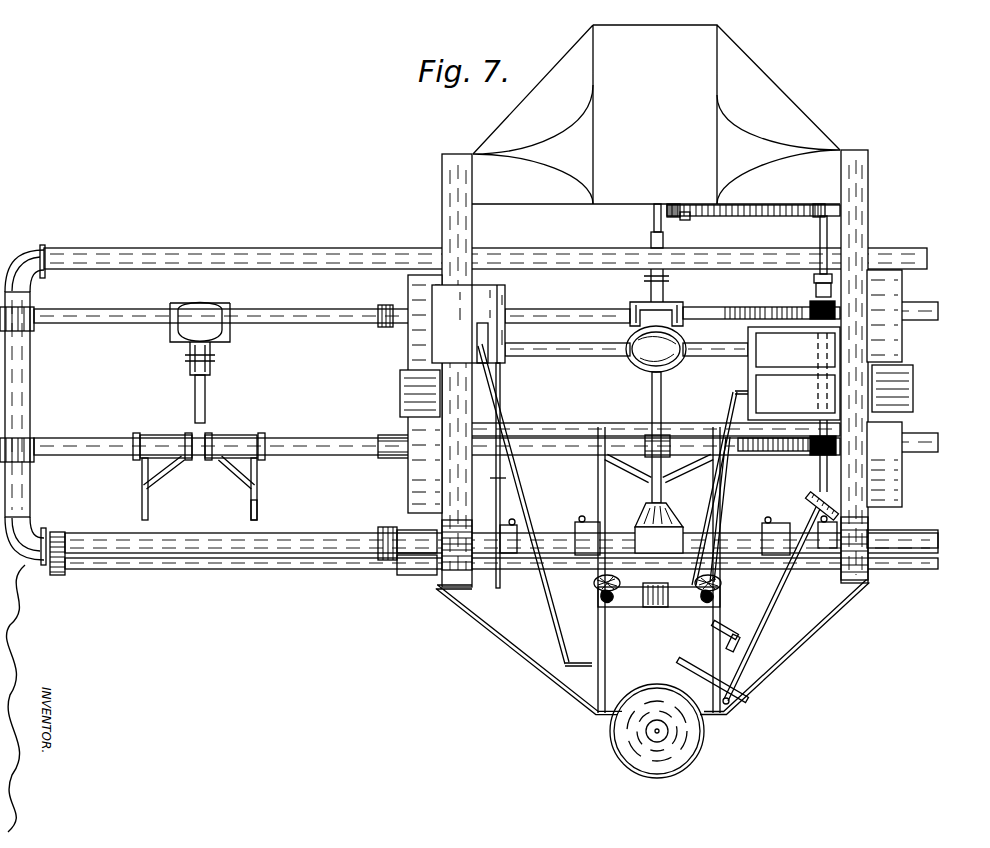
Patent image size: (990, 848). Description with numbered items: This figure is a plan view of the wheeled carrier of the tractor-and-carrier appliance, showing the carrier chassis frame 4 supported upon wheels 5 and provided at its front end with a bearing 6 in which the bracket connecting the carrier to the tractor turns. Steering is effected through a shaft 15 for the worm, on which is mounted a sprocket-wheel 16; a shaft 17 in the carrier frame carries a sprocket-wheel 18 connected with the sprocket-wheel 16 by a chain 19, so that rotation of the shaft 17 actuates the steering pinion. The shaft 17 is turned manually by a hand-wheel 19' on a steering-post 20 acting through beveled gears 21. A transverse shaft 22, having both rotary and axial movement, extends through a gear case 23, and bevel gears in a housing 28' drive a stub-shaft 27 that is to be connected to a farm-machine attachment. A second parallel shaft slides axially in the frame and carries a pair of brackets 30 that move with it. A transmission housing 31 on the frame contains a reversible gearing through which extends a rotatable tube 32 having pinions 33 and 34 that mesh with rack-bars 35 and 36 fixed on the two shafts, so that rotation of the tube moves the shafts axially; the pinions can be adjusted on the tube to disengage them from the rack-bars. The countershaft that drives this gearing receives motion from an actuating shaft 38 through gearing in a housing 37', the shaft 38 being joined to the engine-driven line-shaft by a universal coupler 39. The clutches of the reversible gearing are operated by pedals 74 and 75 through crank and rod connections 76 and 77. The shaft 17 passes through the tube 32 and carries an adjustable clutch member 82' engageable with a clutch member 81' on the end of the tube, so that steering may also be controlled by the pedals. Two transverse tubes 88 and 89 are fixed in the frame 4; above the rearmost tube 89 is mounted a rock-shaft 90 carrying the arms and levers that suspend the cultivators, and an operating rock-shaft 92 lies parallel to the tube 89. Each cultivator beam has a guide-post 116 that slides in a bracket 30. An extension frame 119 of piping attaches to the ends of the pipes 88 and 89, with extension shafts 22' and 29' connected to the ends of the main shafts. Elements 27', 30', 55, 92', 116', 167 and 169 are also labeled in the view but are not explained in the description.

The frame 4 is at (864, 195).
The wheels 5 is at (406, 493).
The bearing 6 is at (656, 114).
The worm shaft 15 is at (686, 217).
The sprocket-wheel 16 is at (672, 206).
The shaft 17 is at (820, 233).
The sprocket-wheel 18 is at (818, 204).
The chain 19 is at (753, 225).
The hand-wheel 19' is at (707, 661).
The steering-post 20 is at (760, 609).
The beveled gears 21 is at (806, 499).
The transverse shaft 22 is at (567, 301).
The extension shaft 22' is at (233, 334).
The gear case 23 is at (468, 324).
The stub-shaft 27 is at (644, 437).
The valve stem 27' is at (224, 399).
The housing 28' is at (211, 339).
The extension shaft 29' is at (298, 445).
The brackets 30 is at (638, 476).
The bracket 30' is at (203, 488).
The housing 31 is at (794, 373).
The rotatable tube 32 is at (816, 289).
The pinion 33 is at (835, 313).
The pinion 34 is at (838, 456).
The rack-bar 35 is at (745, 307).
The rack-bar 36 is at (760, 452).
The housing 37' is at (626, 368).
The actuating shaft 38 is at (648, 241).
The universal coupler 39 is at (655, 205).
The diagonal rod 55 is at (560, 513).
The pedal 74 is at (598, 589).
The pedal 75 is at (721, 585).
The crank and rod connection 76 is at (737, 392).
The crank and rod connection 77 is at (714, 507).
The clutch member 81' is at (811, 274).
The clutch member 82' is at (885, 296).
The tube 88 is at (518, 249).
The tube 89 is at (568, 524).
The rock-shaft 90 is at (830, 549).
The operating rock-shaft 92 is at (510, 490).
The pipe 92' is at (501, 561).
The guide-post 116 is at (641, 515).
The post 116' is at (286, 506).
The extension frame 119 is at (292, 258).
The box 167 is at (659, 540).
The brace 169 is at (633, 476).